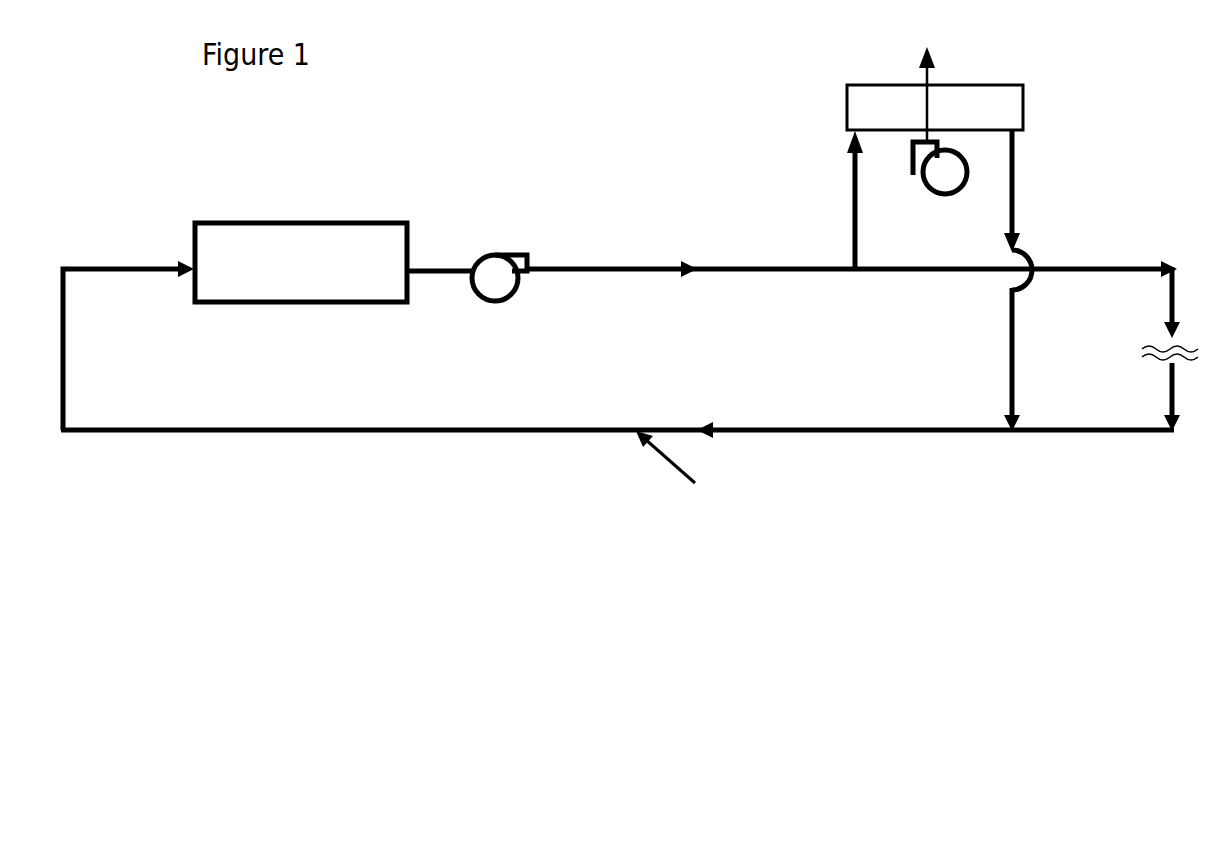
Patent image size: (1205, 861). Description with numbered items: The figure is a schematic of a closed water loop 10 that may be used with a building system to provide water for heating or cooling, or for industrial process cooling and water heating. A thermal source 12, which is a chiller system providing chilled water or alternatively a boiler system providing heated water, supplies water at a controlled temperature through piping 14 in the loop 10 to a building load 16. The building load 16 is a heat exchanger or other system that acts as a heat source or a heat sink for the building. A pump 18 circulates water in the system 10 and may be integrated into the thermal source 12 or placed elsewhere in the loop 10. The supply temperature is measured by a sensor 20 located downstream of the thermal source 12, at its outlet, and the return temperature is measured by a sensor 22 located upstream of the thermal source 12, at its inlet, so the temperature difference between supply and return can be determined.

The closed water loop 10 is at (757, 181).
The thermal source 12 is at (213, 223).
The piping 14 is at (230, 433).
The building load 16 is at (1023, 105).
The pump 18 is at (497, 253).
The sensor 20 is at (610, 263).
The sensor 22 is at (63, 432).